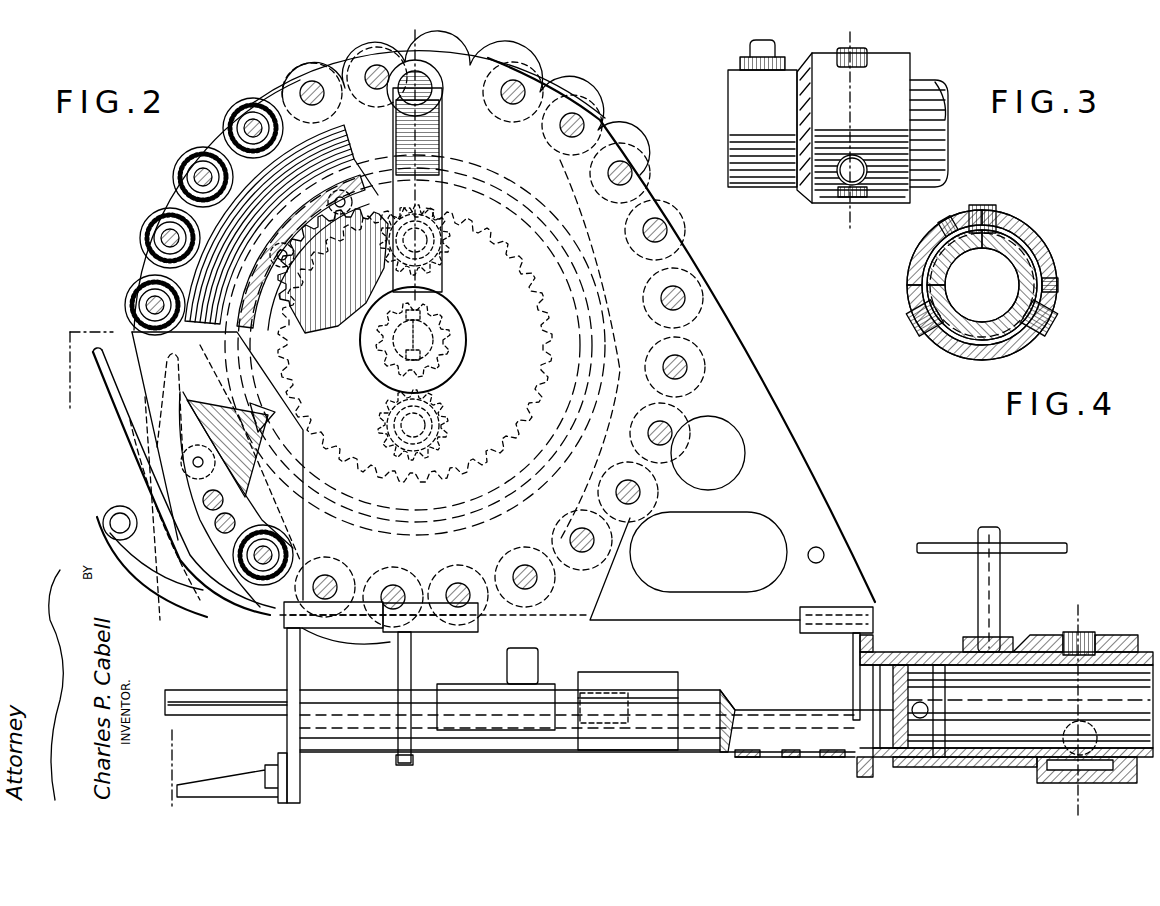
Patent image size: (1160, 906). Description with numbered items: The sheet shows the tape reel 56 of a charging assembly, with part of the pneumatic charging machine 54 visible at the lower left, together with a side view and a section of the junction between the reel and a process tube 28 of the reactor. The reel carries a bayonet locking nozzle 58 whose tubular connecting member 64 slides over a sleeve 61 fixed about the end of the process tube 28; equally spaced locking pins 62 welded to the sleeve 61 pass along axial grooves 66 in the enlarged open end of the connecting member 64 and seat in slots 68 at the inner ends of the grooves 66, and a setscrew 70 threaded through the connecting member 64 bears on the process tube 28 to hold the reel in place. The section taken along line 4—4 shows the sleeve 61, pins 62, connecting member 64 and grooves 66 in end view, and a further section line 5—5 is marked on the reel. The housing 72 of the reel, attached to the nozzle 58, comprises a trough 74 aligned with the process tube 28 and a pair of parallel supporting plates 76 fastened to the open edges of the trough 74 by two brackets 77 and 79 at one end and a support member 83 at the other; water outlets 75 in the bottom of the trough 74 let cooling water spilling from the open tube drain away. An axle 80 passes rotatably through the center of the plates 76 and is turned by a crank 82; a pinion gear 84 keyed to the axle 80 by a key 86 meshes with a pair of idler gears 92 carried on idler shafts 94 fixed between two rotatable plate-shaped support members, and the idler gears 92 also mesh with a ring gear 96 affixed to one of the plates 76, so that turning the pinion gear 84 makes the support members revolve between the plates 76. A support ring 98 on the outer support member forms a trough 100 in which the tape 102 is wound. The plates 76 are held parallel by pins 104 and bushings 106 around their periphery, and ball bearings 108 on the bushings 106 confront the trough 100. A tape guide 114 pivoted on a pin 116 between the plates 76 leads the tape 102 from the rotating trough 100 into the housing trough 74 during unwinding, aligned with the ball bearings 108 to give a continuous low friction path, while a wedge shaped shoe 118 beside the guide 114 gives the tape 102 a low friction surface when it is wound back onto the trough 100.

In FIG. 2, the section line 4— 4 is at (1060, 612).
In FIG. 3, the section line 4— 4 is at (840, 38).
In FIG. 2, the section line 5- 5 is at (440, 33).
In FIG. 2, the process tube 28 is at (970, 760).
In FIG. 3, the process tube 28 is at (948, 158).
In FIG. 4, the process tube 28 is at (1032, 262).
In FIG. 2, the pneumatic charging machine 54 is at (460, 690).
In FIG. 2, the tape reel 56 is at (608, 125).
In FIG. 2, the bayonet locking nozzle 58 is at (1118, 632).
In FIG. 2, the sleeve 61 is at (1100, 780).
In FIG. 4, the sleeve 61 is at (907, 288).
In FIG. 2, the locking pins 62 is at (1072, 636).
In FIG. 3, the locking pins 62 is at (850, 62).
In FIG. 4, the locking pins 62 is at (998, 220).
In FIG. 2, the tubular connecting member 64 is at (1012, 640).
In FIG. 3, the tubular connecting member 64 is at (752, 117).
In FIG. 4, the tubular connecting member 64 is at (1040, 275).
In FIG. 3, the axial grooves 66 is at (895, 200).
In FIG. 4, the axial grooves 66 is at (1058, 288).
In FIG. 3, the slots 68 is at (854, 160).
In FIG. 2, the setscrew 70 is at (978, 571).
In FIG. 3, the setscrew 70 is at (750, 47).
In FIG. 2, the housing 72 is at (676, 652).
In FIG. 2, the trough 74 is at (710, 755).
In FIG. 2, the water outlets 75 is at (803, 752).
In FIG. 2, the supporting plates 76 is at (780, 478).
In FIG. 2, the bracket 77 is at (290, 670).
In FIG. 2, the bracket 79 is at (398, 675).
In FIG. 2, the axle 80 is at (392, 345).
In FIG. 2, the crank 82 is at (440, 135).
In FIG. 2, the support member 83 is at (873, 648).
In FIG. 2, the pinion gear 84 is at (455, 323).
In FIG. 2, the key 86 is at (392, 318).
In FIG. 2, the idler gears 92 is at (395, 270).
In FIG. 2, the idler shafts 94 is at (435, 290).
In FIG. 2, the ring gear 96 is at (333, 271).
In FIG. 2, the support ring 98 is at (186, 318).
In FIG. 2, the trough 100 is at (222, 272).
In FIG. 2, the tape 102 is at (330, 148).
In FIG. 2, the pins 104 is at (688, 362).
In FIG. 2, the bushings 106 is at (222, 140).
In FIG. 2, the ball bearings 108 is at (160, 195).
In FIG. 2, the tape guide 114 is at (113, 437).
In FIG. 2, the pin 116 is at (115, 510).
In FIG. 2, the wedge shaped shoe 118 is at (200, 490).